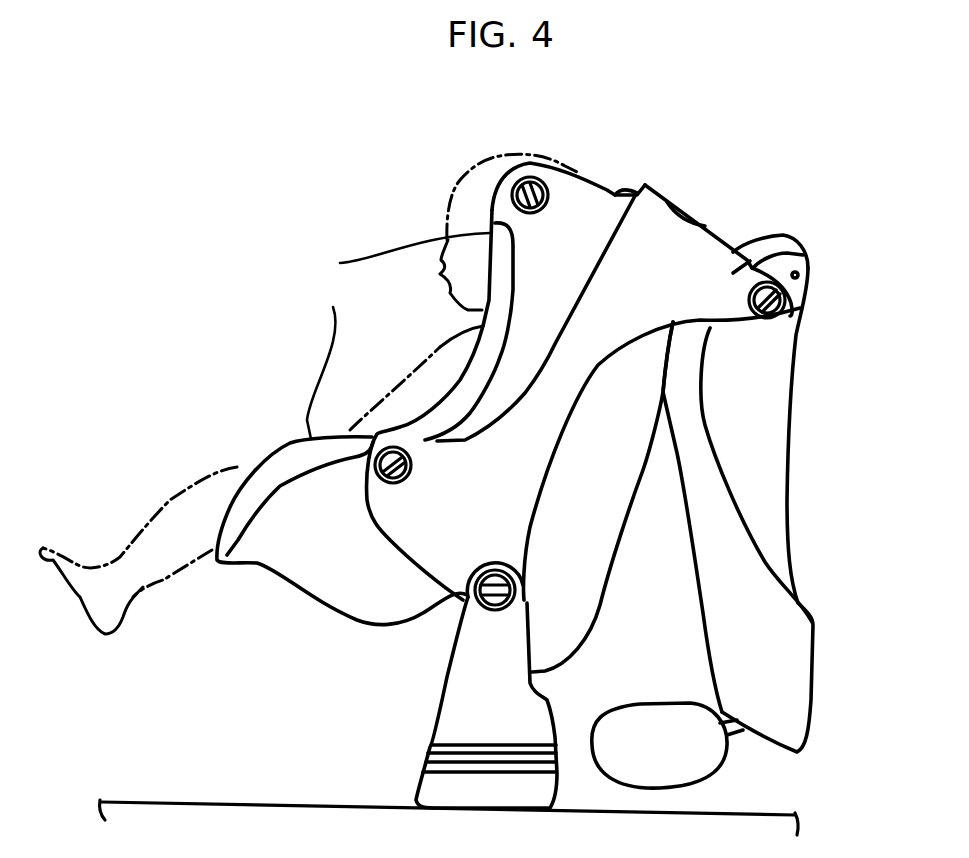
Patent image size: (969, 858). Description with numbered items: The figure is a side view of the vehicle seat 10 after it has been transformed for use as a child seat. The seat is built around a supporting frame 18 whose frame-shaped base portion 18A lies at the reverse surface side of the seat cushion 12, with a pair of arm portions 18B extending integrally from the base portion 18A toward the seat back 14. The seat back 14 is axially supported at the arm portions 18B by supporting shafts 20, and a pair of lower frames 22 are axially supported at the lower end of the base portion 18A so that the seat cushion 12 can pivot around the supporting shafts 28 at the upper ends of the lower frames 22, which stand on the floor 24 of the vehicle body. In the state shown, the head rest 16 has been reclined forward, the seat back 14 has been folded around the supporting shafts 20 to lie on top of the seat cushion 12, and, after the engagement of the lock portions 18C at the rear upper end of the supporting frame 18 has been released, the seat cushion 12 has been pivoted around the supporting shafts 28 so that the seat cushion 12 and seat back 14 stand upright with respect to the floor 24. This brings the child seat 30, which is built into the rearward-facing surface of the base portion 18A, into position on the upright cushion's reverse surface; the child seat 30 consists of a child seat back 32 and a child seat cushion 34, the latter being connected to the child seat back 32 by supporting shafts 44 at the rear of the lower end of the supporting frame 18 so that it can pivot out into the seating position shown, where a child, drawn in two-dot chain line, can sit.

The vehicle seat 10 is at (630, 165).
The seat cushion 12 is at (590, 582).
The seat back 14 is at (810, 633).
The head rest 16 is at (650, 770).
The supporting frame 18 is at (666, 193).
The base portion 18A is at (558, 412).
The arm portions 18B is at (761, 243).
The lock portions 18C is at (509, 188).
The supporting shafts 20 is at (790, 313).
The lower frames 22 is at (440, 710).
The floor 24 is at (274, 800).
The supporting shafts 28 is at (466, 604).
The child seat 30 is at (371, 336).
The child seat back 32 is at (395, 252).
The child seat cushion 34 is at (317, 368).
The supporting shafts 44 is at (385, 483).